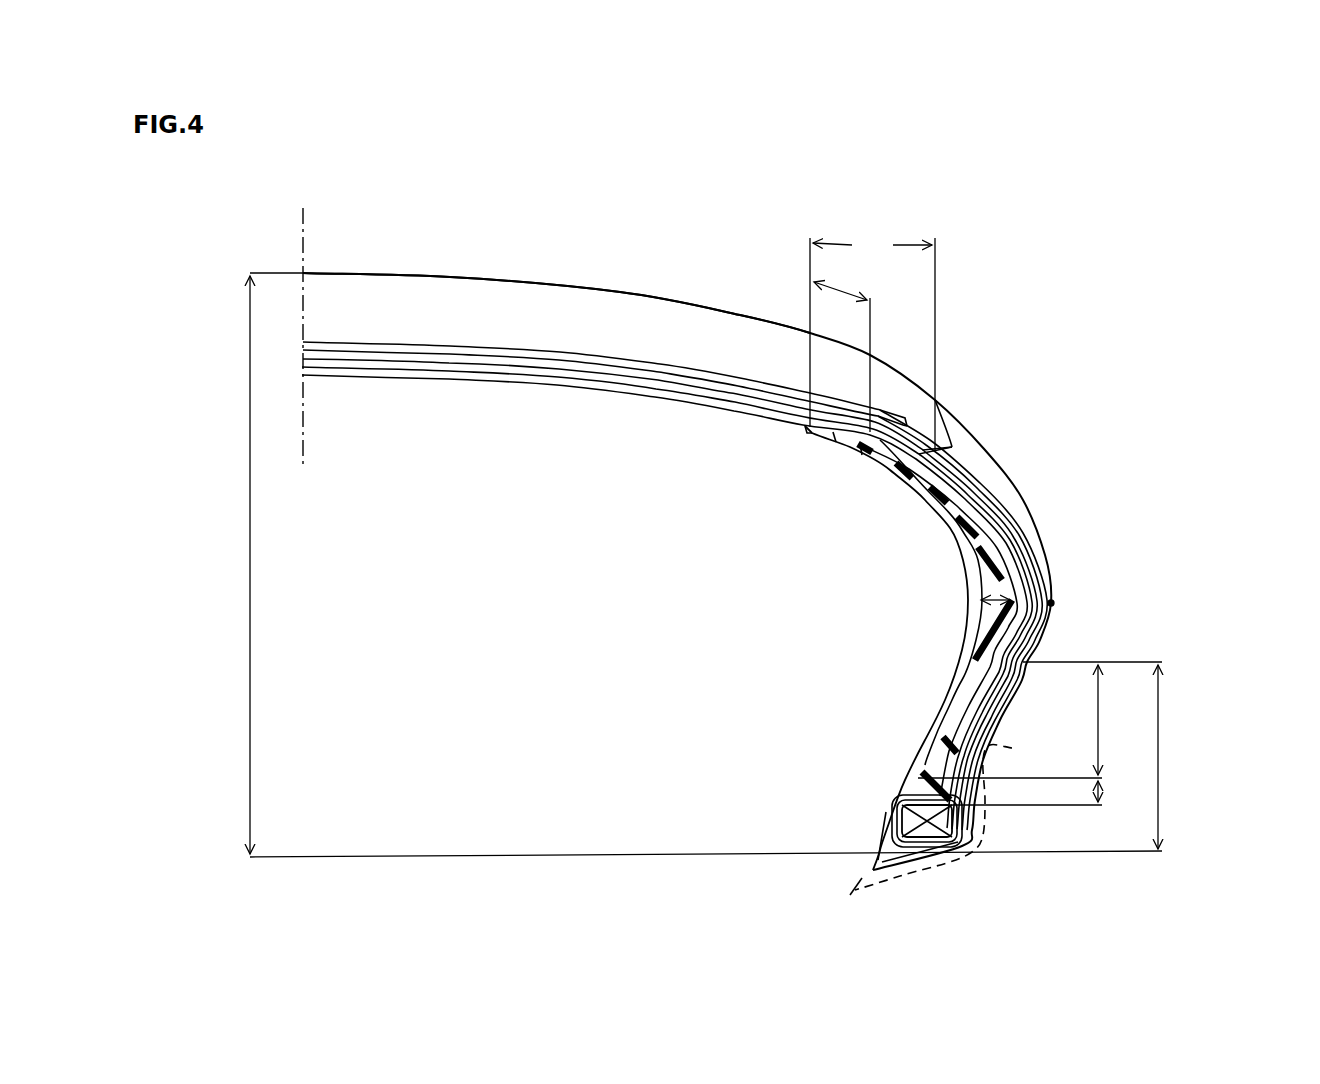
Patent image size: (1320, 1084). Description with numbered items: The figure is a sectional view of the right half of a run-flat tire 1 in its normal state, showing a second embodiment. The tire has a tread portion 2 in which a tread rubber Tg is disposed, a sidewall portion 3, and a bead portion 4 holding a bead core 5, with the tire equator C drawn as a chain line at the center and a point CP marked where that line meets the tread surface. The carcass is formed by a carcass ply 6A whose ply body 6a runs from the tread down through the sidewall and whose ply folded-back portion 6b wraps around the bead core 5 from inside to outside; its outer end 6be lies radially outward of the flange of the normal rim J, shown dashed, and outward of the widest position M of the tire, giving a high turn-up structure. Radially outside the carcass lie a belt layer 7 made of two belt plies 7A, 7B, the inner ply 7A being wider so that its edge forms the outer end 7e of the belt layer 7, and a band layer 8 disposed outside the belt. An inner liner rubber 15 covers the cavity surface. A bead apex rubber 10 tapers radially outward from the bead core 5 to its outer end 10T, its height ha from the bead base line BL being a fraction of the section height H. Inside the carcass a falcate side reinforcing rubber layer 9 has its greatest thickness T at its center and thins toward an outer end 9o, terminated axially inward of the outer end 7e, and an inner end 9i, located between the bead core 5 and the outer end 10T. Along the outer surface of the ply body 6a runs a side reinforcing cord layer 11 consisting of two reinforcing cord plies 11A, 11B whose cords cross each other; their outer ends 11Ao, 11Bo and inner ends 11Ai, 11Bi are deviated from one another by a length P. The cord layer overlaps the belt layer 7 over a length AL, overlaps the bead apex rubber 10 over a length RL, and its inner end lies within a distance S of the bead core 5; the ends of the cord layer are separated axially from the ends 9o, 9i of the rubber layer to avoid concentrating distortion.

The run-flat tire 1 is at (973, 325).
The tread portion 2 is at (550, 270).
The sidewall portion 3 is at (1062, 559).
The bead portion 4 is at (872, 818).
The bead core 5 is at (935, 820).
The carcass ply 6A is at (1066, 620).
The ply body 6a is at (1000, 488).
The ply folded-back portion 6b is at (1010, 535).
The outer end of the ply folded-back portion 6be is at (985, 510).
The belt layer 7 is at (627, 458).
The belt ply 7A is at (388, 363).
The belt ply 7B is at (443, 358).
The outer end of the belt layer 7e is at (952, 446).
The band layer 8 is at (545, 345).
The side reinforcing rubber layer 9 is at (978, 558).
The outer end of the side reinforcing rubber layer 9o is at (833, 434).
The inner end of the side reinforcing rubber layer 9i is at (912, 775).
The bead apex rubber 10 is at (945, 715).
The outer end of the bead apex rubber 10T is at (1027, 655).
The side reinforcing cord layer 11 is at (875, 622).
The reinforcing cord ply 11A is at (912, 458).
The reinforcing cord ply 11B is at (958, 492).
The outer end of reinforcing cord ply 11A 11Ao is at (807, 428).
The outer end of reinforcing cord ply 11B 11Bo is at (860, 446).
The inner end of reinforcing cord ply 11A 11Ai is at (900, 792).
The inner end of reinforcing cord ply 11B 11Bi is at (927, 757).
The inner liner rubber 15 is at (627, 390).
The tire equator C is at (301, 323).
The tread crown point CP is at (303, 272).
The tread rubber Tg is at (470, 300).
The length of the superposed portion of the side reinforcing cord layer and the belt AL is at (872, 341).
The length of positional deviation P is at (842, 347).
The height of cross section of the tire H is at (270, 563).
The bead base line BL is at (690, 855).
The normal rim J is at (920, 872).
The widest position of the tire M is at (1053, 603).
The greatest thickness of the side reinforcing rubber layer T is at (995, 601).
The length of the superposed portion of the bead apex rubber and the side reinforcin RL is at (1040, 733).
The distance from the outer surface of the bead core S is at (1109, 793).
The height of the outer end of the bead apex rubber ha is at (1176, 757).